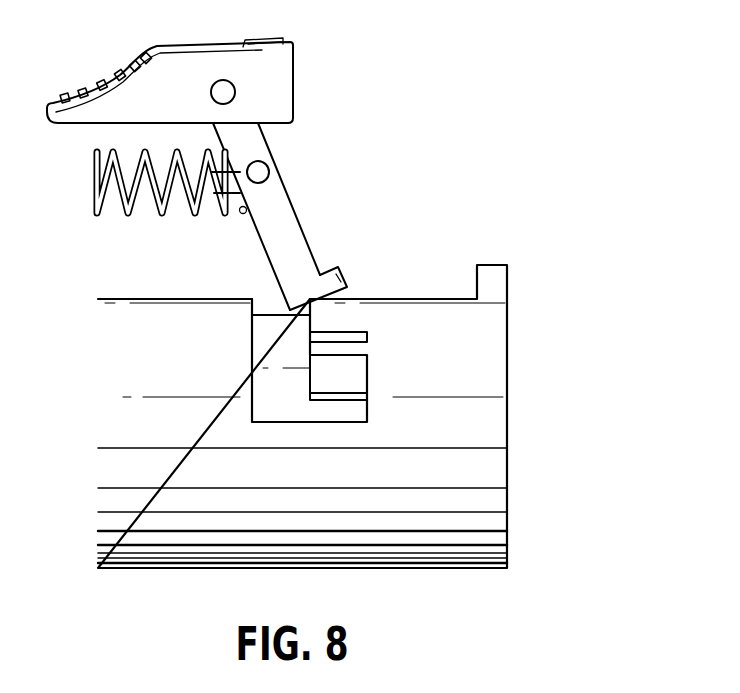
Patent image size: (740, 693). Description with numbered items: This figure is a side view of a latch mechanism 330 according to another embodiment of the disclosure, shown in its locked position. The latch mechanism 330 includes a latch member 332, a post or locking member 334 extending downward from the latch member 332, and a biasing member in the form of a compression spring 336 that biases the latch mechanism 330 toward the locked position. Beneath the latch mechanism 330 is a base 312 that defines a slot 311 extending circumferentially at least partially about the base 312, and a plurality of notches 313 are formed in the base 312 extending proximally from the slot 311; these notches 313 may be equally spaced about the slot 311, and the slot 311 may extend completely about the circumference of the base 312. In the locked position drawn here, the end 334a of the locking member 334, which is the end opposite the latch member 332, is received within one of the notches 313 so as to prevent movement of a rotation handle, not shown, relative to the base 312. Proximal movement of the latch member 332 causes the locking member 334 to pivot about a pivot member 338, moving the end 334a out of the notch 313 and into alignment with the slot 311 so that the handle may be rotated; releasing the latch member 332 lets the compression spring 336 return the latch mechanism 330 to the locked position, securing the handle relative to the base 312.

The latch mechanism 330 is at (469, 77).
The latch member 332 is at (272, 70).
The locking member 334 is at (277, 210).
The end of the locking member 334a is at (342, 273).
The pivot member 338 is at (258, 172).
The compression spring 336 is at (130, 210).
The base 312 is at (480, 478).
The slot 311 is at (273, 395).
The notches 313 is at (352, 405).